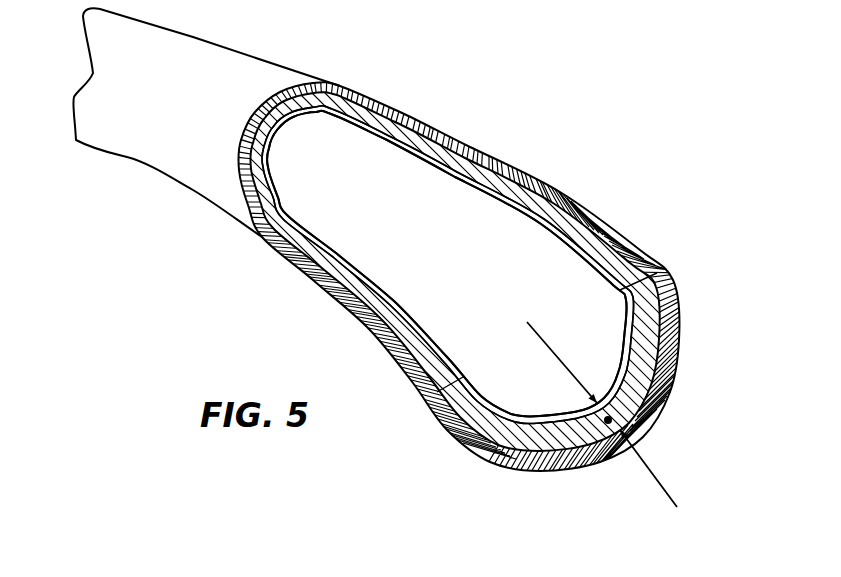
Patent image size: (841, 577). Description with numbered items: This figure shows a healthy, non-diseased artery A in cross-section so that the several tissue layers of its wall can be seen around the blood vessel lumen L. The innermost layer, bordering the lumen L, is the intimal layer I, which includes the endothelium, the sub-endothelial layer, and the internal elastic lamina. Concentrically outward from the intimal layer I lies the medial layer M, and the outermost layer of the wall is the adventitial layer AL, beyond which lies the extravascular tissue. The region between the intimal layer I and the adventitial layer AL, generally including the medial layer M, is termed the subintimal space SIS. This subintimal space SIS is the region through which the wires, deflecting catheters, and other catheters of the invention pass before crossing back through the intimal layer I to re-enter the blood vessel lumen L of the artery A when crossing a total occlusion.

The artery A is at (522, 112).
The blood vessel lumen L is at (548, 253).
The intimal layer I is at (630, 322).
The medial layer M is at (637, 378).
The subintimal space SIS is at (608, 420).
The adventitial layer AL is at (590, 457).